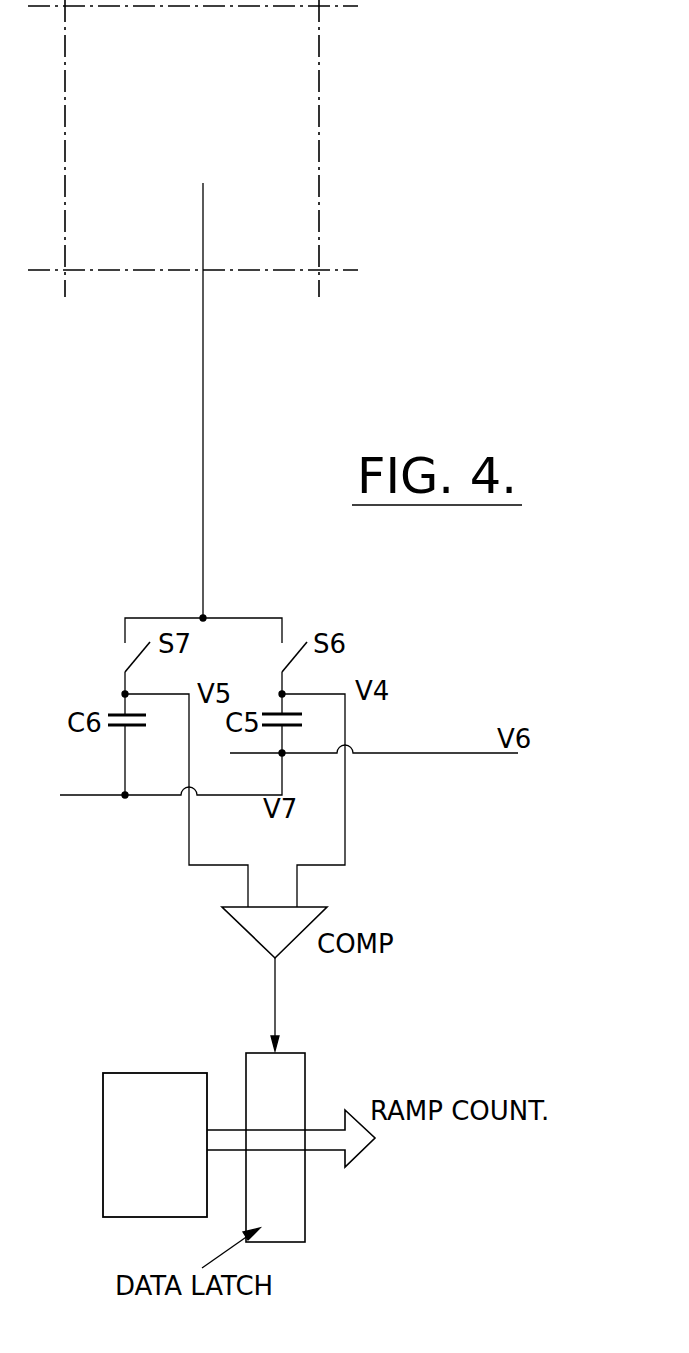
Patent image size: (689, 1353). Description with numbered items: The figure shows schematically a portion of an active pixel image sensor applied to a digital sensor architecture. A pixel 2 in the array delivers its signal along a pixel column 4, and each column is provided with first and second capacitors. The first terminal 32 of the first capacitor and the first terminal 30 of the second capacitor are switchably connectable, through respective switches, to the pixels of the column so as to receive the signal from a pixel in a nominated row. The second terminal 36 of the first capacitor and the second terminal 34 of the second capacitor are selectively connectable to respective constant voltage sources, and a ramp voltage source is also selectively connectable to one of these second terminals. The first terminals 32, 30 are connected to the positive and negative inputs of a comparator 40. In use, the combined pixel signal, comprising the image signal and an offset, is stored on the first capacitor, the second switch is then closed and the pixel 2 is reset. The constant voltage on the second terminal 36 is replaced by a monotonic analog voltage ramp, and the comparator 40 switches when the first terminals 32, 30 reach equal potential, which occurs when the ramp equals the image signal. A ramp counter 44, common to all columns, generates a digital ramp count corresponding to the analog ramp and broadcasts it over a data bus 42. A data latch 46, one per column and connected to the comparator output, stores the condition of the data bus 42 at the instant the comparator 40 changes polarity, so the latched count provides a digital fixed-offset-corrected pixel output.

The pixel 2 is at (229, 148).
The pixel column 4 is at (231, 400).
The first terminal of capacitor C6 30 is at (99, 694).
The first terminal of capacitor C5 32 is at (335, 724).
The second terminal of capacitor C6 34 is at (104, 745).
The second terminal of capacitor C5 36 is at (299, 758).
The comparator 40 is at (267, 940).
The data bus 42 is at (272, 1095).
The ramp counter 44 is at (170, 1157).
The data latch 46 is at (313, 1148).